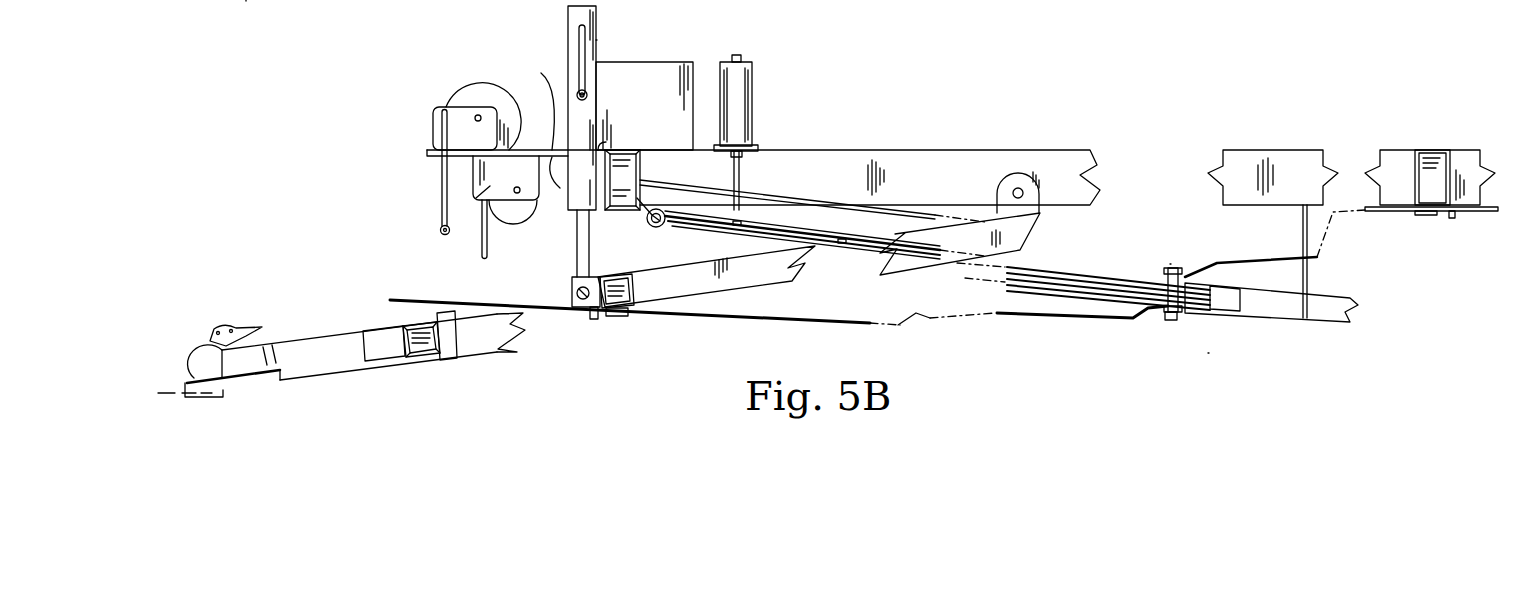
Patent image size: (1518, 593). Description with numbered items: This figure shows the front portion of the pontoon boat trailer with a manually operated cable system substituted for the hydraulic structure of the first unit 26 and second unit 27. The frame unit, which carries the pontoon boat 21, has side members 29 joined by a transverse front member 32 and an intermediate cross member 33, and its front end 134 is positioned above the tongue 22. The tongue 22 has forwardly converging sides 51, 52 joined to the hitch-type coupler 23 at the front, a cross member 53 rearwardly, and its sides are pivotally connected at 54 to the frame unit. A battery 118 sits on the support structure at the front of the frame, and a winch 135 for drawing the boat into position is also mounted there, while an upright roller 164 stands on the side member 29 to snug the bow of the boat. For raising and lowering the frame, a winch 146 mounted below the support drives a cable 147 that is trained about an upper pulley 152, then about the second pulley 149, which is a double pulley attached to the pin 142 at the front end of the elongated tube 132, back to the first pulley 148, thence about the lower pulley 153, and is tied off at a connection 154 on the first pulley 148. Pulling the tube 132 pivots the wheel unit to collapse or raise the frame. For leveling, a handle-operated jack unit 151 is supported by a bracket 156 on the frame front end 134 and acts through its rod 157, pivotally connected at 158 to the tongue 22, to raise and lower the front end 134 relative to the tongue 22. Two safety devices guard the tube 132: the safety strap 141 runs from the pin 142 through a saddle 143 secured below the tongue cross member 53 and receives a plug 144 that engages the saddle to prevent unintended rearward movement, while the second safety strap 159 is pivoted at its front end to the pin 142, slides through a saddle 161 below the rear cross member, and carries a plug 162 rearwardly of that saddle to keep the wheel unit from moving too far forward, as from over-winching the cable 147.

The pontoon boat 21 is at (246, 0).
The tongue 22 is at (376, 0).
The coupler 23 is at (248, 367).
The first unit 26 is at (1210, 351).
The second unit 27 is at (608, 38).
The side member 29 is at (983, 160).
The transverse front member 32 is at (641, 158).
The intermediate cross member 33 is at (1413, 158).
The side 51 is at (493, 350).
The side 52 is at (440, 356).
The cross member 53 is at (643, 290).
The pivotal connection 54 is at (1019, 193).
The battery 118 is at (641, 70).
The tube 132 is at (1322, 312).
The front end 134 is at (800, 160).
The winch 135 is at (452, 115).
The safety strap 141 is at (762, 315).
The pin 142 is at (1170, 318).
The saddle 143 is at (620, 319).
The plug 144 is at (592, 316).
The winch 146 is at (471, 203).
The cable 147 is at (975, 365).
The first pulley 148 is at (663, 242).
The second pulley 149 is at (1171, 262).
The jack unit 151 is at (570, 21).
The upper pulley 152 is at (1170, 270).
The lower pulley 153 is at (1220, 313).
The connection 154 is at (706, 232).
The bracket 156 is at (602, 150).
The rod 157 is at (580, 248).
The pivotal connection 158 is at (573, 281).
The second safety strap 159 is at (1268, 258).
The saddle 161 is at (1427, 212).
The plug 162 is at (1453, 215).
The upright roller 164 is at (755, 65).